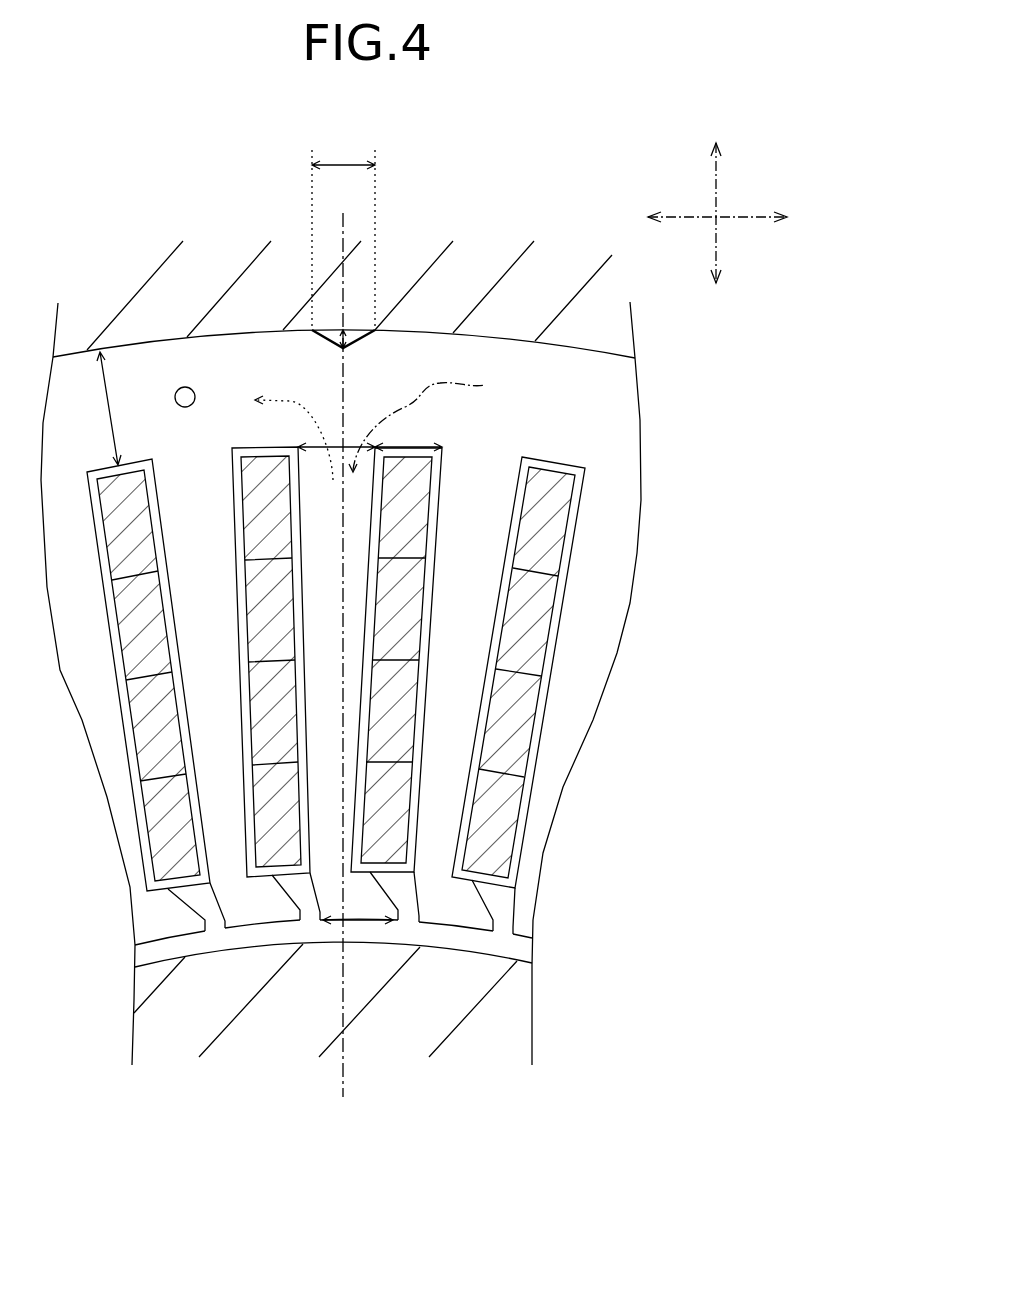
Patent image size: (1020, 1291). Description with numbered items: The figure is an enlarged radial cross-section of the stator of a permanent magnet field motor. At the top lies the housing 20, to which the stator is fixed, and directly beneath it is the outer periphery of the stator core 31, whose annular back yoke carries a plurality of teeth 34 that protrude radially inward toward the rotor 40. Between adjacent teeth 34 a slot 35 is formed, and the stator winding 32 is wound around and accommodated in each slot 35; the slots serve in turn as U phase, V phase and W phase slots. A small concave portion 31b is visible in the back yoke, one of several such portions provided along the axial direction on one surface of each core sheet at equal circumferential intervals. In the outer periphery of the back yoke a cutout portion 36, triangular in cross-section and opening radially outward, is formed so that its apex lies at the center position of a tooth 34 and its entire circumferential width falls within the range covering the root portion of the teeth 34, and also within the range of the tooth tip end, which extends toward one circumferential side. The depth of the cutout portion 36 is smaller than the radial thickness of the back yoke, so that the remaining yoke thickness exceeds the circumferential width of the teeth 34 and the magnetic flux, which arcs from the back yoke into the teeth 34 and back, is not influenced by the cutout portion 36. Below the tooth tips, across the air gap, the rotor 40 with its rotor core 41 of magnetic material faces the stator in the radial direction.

The housing 20 is at (587, 337).
The stator core 31 is at (134, 354).
The concave portion 31b is at (186, 387).
The stator winding 32 is at (557, 523).
The teeth 34 is at (457, 617).
The slot 35 is at (563, 470).
The cutout portion 36 is at (313, 330).
The rotor 40 is at (508, 1018).
The rotor core 41 is at (147, 1033).